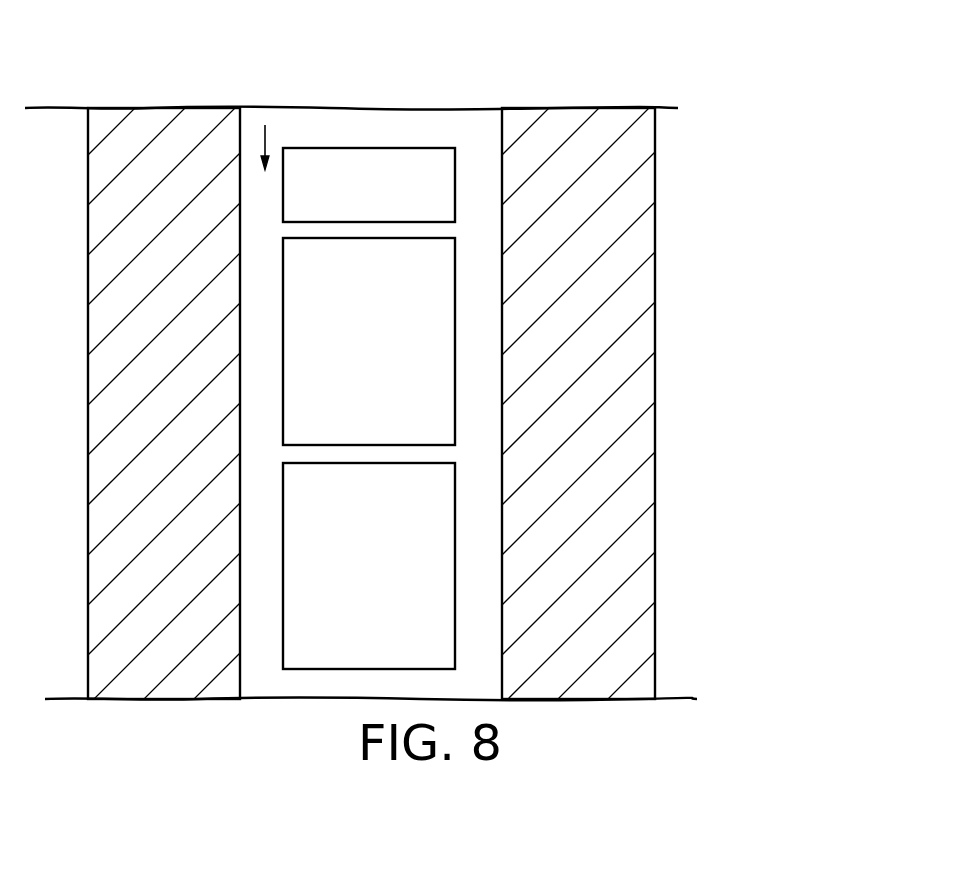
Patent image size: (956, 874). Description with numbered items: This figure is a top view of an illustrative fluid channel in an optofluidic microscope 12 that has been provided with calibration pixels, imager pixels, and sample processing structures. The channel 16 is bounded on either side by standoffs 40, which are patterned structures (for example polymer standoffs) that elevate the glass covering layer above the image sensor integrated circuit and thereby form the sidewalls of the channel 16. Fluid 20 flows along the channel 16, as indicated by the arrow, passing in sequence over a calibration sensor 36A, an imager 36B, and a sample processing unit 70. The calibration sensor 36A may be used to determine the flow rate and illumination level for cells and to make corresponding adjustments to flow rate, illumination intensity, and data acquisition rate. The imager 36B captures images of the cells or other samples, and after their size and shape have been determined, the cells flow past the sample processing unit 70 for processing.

The optofluidic microscope 12 is at (618, 43).
The channel 16 is at (377, 121).
The fluid flow 20 is at (266, 137).
The standoff 40 is at (158, 118).
The calibration sensor 36A is at (405, 153).
The imager 36B is at (392, 397).
The sample processing unit 70 is at (356, 645).